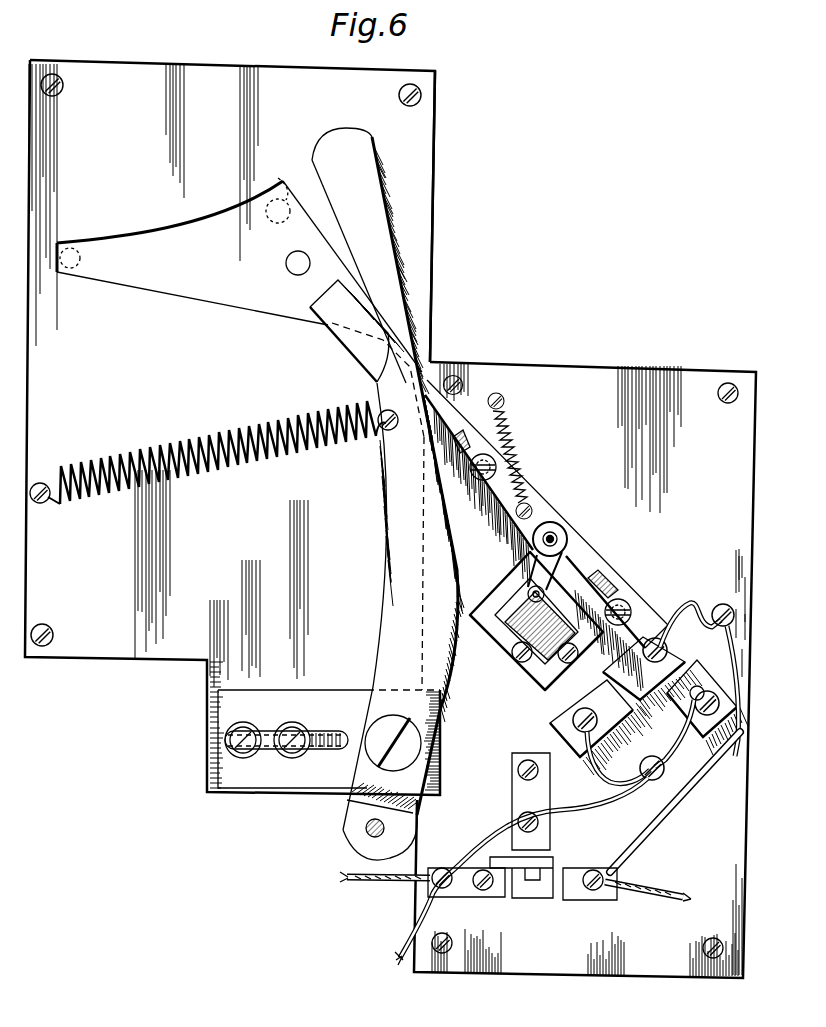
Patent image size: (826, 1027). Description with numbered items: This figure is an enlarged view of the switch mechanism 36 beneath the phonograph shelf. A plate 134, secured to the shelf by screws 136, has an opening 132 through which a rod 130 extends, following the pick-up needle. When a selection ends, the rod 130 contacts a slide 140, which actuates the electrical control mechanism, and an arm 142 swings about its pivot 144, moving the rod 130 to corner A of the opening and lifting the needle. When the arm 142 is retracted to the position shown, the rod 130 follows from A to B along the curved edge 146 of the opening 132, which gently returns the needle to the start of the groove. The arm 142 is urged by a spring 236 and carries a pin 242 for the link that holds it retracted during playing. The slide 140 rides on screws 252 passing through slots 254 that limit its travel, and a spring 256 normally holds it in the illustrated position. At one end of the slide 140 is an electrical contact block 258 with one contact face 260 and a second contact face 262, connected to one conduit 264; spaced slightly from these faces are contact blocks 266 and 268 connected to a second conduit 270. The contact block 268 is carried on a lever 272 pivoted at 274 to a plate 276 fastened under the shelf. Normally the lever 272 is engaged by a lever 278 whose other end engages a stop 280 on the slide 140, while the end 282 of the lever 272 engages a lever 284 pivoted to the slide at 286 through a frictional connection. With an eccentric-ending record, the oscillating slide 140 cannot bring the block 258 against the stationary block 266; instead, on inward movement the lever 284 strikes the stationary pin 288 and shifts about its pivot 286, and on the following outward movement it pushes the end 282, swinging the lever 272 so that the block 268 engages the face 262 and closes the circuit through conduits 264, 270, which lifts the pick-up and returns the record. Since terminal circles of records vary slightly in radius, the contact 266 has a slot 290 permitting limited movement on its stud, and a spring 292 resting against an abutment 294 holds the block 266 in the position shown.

The switch mechanism 36 is at (76, 62).
The screws 136 is at (62, 92).
The plate 134 is at (424, 177).
The curved edge 146 is at (180, 243).
The opening 132 is at (126, 286).
The rod 130 is at (286, 263).
The slide 140 is at (360, 347).
The arm 142 is at (386, 256).
The pivot 144 is at (383, 727).
The pin 242 is at (365, 828).
The spring 236 is at (262, 428).
The plate 276 is at (704, 380).
The spring 256 is at (512, 466).
The slots 254 is at (472, 447).
The screws 252 is at (497, 462).
The stationary pin 288 is at (522, 600).
The pivot 286 is at (554, 536).
The lever 284 is at (566, 552).
The end 282 is at (523, 580).
The lever 278 is at (577, 647).
The pivot 274 is at (512, 658).
The lever 272 is at (527, 677).
The second contact face 262 is at (548, 716).
The contact block 268 is at (549, 732).
The stop 280 is at (634, 640).
The electrical contact block 258 is at (687, 606).
The contact face 260 is at (678, 661).
The contact block 266 is at (663, 733).
The slot 290 is at (742, 770).
The conduit 264 is at (672, 806).
The spring 292 is at (676, 780).
The abutment 294 is at (742, 780).
The second conduit 270 is at (612, 856).